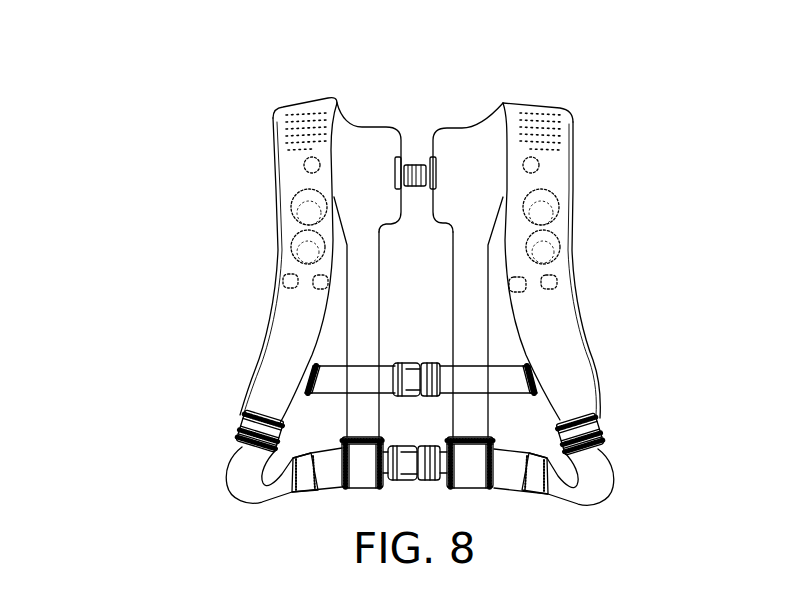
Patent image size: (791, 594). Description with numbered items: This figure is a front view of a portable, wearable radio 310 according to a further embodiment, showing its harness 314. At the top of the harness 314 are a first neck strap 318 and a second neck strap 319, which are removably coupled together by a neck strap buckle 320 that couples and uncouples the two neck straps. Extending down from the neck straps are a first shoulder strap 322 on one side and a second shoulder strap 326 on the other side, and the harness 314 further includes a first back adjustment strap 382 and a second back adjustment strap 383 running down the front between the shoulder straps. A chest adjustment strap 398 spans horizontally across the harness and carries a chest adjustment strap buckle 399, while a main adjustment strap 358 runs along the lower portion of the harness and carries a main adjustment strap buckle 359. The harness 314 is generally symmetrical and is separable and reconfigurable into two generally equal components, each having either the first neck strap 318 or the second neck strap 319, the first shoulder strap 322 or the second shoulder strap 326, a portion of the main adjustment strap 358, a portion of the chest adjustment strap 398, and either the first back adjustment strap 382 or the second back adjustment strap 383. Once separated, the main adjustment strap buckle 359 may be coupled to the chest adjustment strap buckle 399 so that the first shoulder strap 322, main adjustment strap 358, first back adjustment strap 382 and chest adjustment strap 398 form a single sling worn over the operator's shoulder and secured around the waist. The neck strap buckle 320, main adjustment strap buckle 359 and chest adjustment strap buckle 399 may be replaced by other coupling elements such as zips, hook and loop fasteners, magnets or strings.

The portable, wearable radio 310 is at (171, 91).
The harness 314 is at (576, 81).
The first neck strap 318 is at (369, 110).
The second neck strap 319 is at (449, 111).
The neck strap buckle 320 is at (410, 183).
The first shoulder strap 322 is at (266, 181).
The second shoulder strap 326 is at (580, 177).
The main adjustment strap 358 is at (272, 502).
The main adjustment strap buckle 359 is at (420, 465).
The first back adjustment strap 382 is at (363, 278).
The second back adjustment strap 383 is at (475, 283).
The chest adjustment strap 398 is at (478, 368).
The chest adjustment strap buckle 399 is at (420, 373).